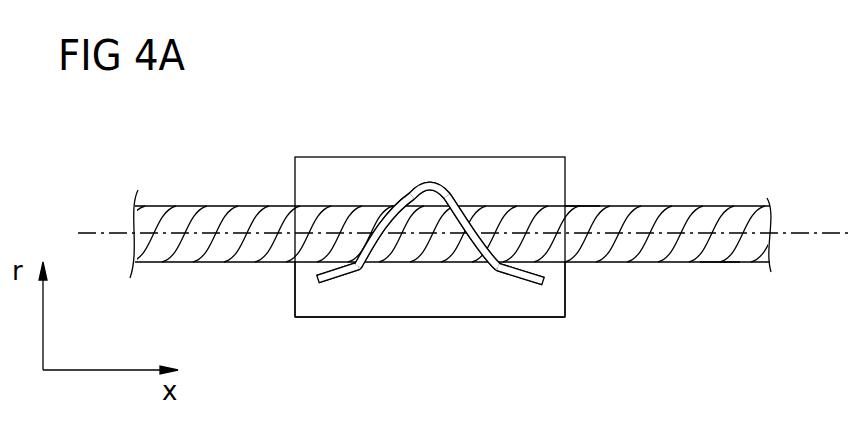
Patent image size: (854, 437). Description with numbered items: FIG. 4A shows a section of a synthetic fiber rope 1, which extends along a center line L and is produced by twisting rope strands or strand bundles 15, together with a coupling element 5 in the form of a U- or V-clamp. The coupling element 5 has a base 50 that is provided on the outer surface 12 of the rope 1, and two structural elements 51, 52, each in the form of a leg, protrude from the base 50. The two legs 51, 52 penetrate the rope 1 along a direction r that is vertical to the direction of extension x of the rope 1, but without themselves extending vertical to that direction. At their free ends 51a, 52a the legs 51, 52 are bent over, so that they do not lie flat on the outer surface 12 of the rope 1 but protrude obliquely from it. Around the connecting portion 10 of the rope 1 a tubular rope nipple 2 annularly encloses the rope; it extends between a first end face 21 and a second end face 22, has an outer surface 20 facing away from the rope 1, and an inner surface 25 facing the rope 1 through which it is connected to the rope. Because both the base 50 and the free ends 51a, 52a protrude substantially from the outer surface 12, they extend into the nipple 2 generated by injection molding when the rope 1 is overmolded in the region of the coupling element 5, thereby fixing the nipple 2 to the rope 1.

The rope 1 is at (732, 192).
The connecting portion 10 is at (560, 204).
The outer surface 12 is at (720, 263).
The strand bundles 15 is at (677, 245).
The rope nipple 2 is at (517, 142).
The outer surface 20 is at (412, 318).
The first end face 21 is at (295, 284).
The second end face 22 is at (565, 288).
The coupling element 5 is at (446, 236).
The base 50 is at (420, 186).
The structural element 51 is at (390, 208).
The structural element 52 is at (472, 209).
The free end 51a is at (333, 280).
The free end 52a is at (532, 280).
The inner surface 25 is at (415, 252).
The center line L is at (803, 232).